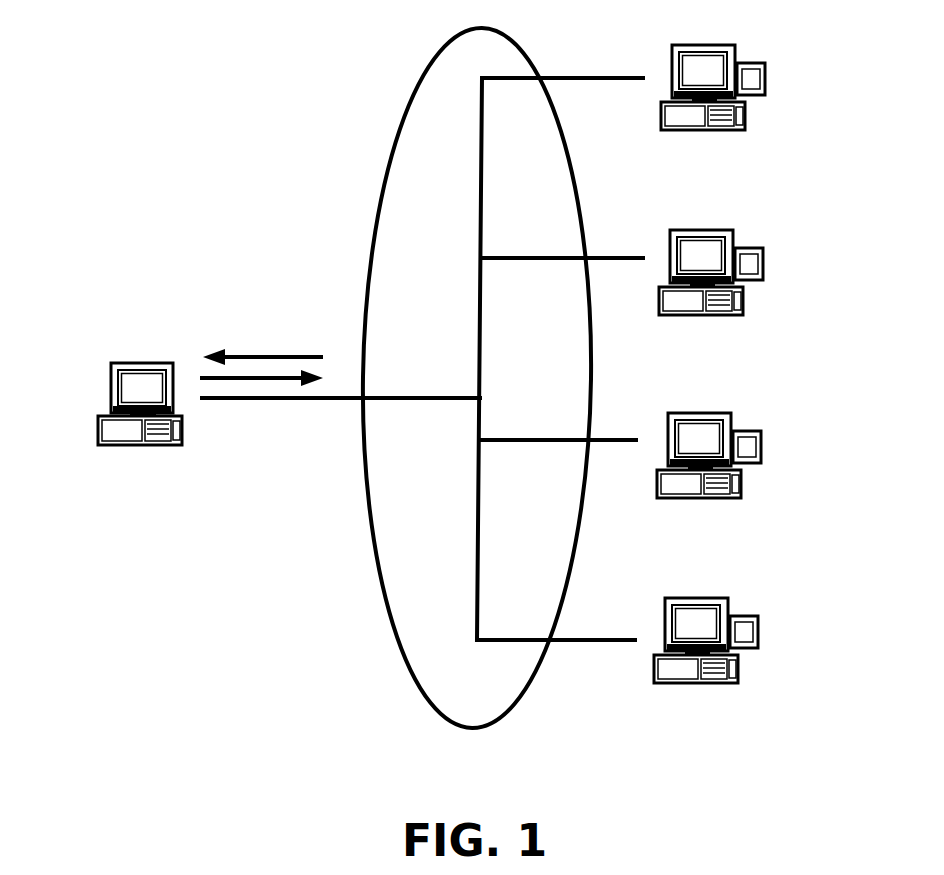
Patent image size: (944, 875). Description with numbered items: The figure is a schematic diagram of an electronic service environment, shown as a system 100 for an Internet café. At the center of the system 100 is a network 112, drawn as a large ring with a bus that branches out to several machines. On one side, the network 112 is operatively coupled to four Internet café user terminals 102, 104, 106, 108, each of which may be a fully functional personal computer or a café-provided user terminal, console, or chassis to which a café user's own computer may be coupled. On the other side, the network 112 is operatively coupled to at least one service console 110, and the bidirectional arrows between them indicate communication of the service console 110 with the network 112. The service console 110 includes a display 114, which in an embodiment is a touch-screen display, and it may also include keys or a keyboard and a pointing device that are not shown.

The system 100 is at (200, 60).
The Internet café user terminal 102 is at (705, 166).
The Internet café user terminal 104 is at (703, 350).
The Internet café user terminal 106 is at (702, 528).
The Internet café user terminal 108 is at (697, 708).
The service console 110 is at (112, 466).
The network 112 is at (385, 152).
The display 114 is at (110, 392).